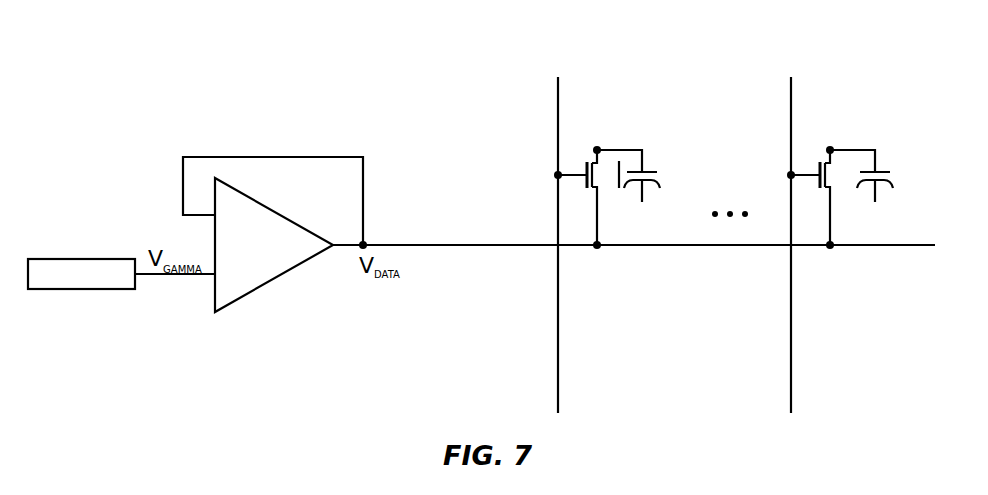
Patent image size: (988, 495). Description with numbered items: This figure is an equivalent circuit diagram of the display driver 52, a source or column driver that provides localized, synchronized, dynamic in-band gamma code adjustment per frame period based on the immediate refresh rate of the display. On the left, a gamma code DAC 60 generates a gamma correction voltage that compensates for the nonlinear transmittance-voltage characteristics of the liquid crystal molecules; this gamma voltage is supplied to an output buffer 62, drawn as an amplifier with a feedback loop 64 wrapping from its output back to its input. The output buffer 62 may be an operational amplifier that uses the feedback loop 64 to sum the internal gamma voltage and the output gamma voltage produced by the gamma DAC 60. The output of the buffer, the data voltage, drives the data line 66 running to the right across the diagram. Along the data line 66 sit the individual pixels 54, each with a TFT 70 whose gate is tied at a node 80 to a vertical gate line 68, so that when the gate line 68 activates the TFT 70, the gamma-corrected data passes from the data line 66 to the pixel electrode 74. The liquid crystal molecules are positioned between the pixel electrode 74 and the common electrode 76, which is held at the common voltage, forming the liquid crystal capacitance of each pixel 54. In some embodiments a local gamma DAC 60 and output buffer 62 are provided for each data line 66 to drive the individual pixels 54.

The display driver 52 is at (214, 114).
The pixels 54 is at (767, 59).
The gamma code DAC 60 is at (82, 258).
The output buffer 62 is at (293, 213).
The feedback loop 64 is at (272, 156).
The data line 66 is at (440, 248).
The gate line 68 is at (559, 297).
The TFT 70 is at (586, 151).
The pixel electrode 74 is at (657, 172).
The common electrode 76 is at (658, 185).
The gate node 80 is at (556, 173).